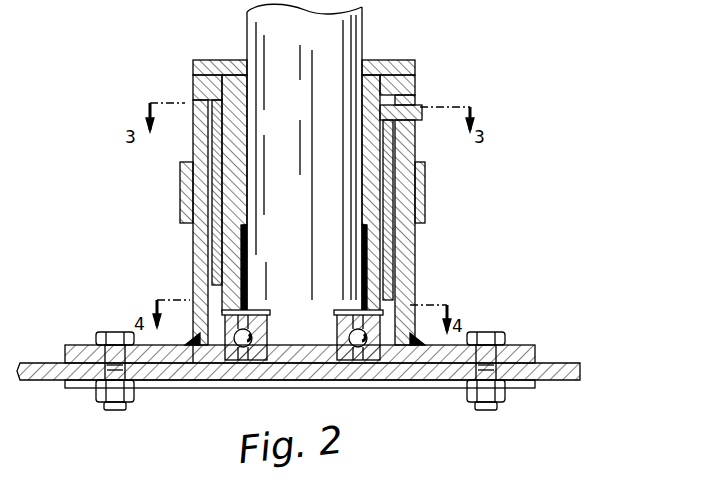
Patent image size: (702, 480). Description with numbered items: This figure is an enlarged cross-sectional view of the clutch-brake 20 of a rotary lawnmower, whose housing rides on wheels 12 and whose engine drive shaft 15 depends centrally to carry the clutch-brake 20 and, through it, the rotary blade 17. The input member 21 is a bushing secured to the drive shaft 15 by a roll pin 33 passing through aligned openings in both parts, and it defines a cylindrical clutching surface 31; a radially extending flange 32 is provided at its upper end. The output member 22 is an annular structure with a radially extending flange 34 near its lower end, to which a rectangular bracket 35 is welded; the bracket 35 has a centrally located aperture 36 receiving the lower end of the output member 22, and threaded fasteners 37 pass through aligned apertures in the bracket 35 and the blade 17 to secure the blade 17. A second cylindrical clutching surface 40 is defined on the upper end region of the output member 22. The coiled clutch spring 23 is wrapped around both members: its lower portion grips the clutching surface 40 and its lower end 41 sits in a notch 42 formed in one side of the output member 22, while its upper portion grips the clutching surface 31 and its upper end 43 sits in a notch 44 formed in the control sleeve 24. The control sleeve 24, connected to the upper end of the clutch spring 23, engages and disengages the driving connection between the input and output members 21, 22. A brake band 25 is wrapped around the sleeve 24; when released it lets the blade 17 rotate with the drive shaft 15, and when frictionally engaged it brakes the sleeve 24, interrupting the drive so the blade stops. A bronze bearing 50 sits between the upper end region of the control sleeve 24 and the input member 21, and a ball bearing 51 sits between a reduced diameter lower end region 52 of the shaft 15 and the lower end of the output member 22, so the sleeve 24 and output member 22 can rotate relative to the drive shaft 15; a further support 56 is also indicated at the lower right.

The wheels 12 is at (18, 0).
The drive shaft 15 is at (355, 42).
The rotary blade 17 is at (575, 382).
The clutch-brake 20 is at (508, 152).
The input member 21 is at (205, 228).
The output member 22 is at (215, 300).
The coiled clutch spring 23 is at (405, 205).
The control sleeve 24 is at (410, 246).
The brake band 25 is at (180, 195).
The cylindrical clutching surface 31 is at (232, 150).
The cap ring 32 is at (193, 63).
The roll pin 33 is at (395, 62).
The radially extending flange 34 is at (200, 345).
The rectangular bracket 35 is at (535, 350).
The centrally located aperture 36 is at (222, 365).
The threaded fasteners 37 is at (112, 334).
The cylindrical clutching surface 40 is at (220, 252).
The lower end of clutch spring 41 is at (404, 292).
The notch 42 is at (378, 280).
The upper end of clutch spring 43 is at (427, 115).
The notch 44 is at (410, 100).
The bronze bearing 50 is at (193, 88).
The ball bearing 51 is at (262, 340).
The reduced diameter lower end region 52 is at (305, 348).
The support 56 is at (556, 479).